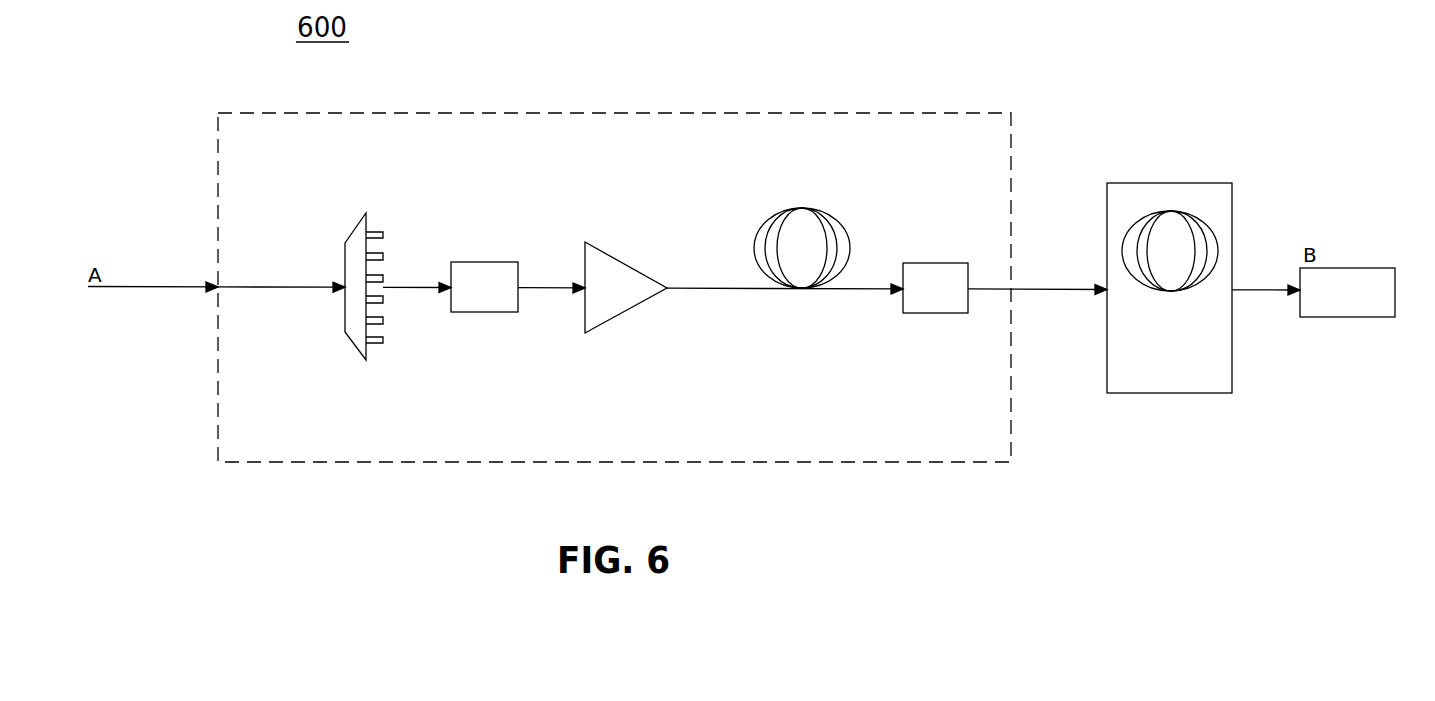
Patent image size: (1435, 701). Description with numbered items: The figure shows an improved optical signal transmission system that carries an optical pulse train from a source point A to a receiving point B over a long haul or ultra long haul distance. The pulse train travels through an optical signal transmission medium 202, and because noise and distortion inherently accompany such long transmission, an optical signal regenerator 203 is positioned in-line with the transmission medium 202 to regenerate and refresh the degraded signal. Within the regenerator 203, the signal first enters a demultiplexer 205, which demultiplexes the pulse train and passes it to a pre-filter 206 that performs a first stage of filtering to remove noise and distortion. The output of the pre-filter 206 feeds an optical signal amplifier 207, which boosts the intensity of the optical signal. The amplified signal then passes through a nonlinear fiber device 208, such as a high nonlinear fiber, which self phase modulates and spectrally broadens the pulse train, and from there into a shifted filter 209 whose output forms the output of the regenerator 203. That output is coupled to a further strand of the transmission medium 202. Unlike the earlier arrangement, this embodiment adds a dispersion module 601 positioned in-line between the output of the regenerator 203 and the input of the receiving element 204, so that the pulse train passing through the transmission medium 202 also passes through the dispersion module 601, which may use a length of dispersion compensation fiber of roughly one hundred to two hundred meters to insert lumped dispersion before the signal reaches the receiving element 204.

The optical signal transmission medium 202 is at (160, 286).
The optical signal regenerator 203 is at (620, 113).
The receiving element 204 is at (1373, 268).
The demultiplexer 205 is at (357, 227).
The pre-filter 206 is at (485, 262).
The optical signal amplifier 207 is at (623, 263).
The nonlinear fiber device 208 is at (802, 208).
The shifted filter 209 is at (936, 263).
The dispersion module 601 is at (1172, 183).